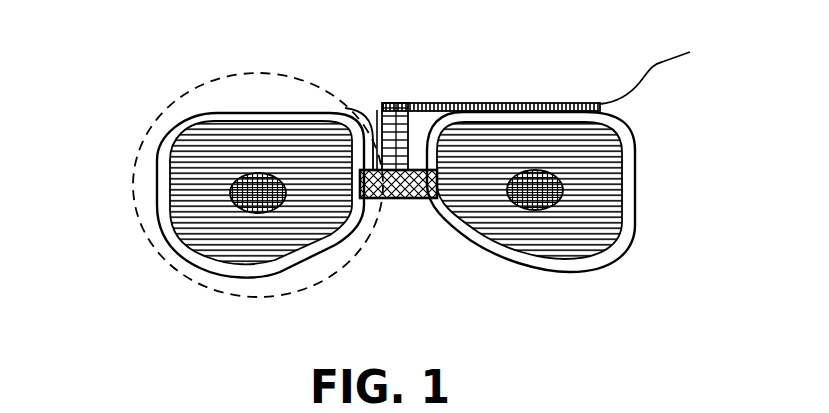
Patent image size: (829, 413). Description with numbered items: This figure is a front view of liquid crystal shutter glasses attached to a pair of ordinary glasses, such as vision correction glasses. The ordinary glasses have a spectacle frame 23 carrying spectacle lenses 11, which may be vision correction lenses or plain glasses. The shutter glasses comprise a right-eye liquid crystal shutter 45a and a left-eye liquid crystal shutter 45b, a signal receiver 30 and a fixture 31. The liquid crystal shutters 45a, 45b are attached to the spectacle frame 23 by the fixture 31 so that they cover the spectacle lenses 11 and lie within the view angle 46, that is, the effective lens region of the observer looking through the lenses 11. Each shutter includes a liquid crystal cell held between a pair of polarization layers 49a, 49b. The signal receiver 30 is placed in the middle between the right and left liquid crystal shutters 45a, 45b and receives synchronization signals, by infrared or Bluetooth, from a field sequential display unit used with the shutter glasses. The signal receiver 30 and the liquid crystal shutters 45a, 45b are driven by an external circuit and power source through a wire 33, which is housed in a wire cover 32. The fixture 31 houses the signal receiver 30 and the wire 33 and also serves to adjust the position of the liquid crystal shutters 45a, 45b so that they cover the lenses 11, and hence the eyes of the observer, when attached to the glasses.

The spectacle lenses 11 is at (403, 208).
The spectacle frame 23 is at (377, 110).
The signal receiver 30 is at (345, 108).
The fixture 31 is at (398, 103).
The wire cover 32 is at (462, 103).
The wire 33 is at (662, 65).
The right-eye liquid crystal shutter 45a is at (178, 232).
The left-eye liquid crystal shutter 45b is at (633, 200).
The view angle 46 is at (148, 125).
The polarization layer 49a is at (283, 207).
The polarization layer 49b is at (250, 253).